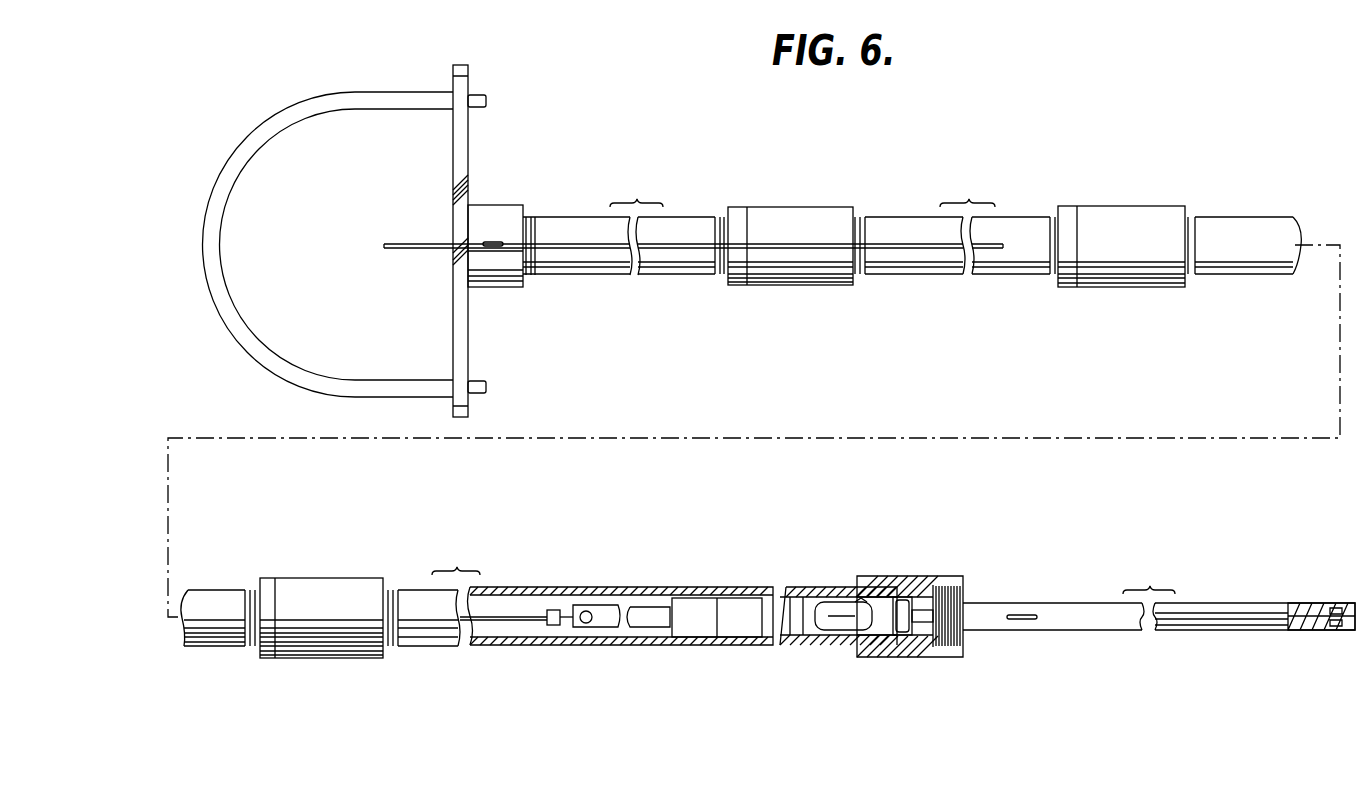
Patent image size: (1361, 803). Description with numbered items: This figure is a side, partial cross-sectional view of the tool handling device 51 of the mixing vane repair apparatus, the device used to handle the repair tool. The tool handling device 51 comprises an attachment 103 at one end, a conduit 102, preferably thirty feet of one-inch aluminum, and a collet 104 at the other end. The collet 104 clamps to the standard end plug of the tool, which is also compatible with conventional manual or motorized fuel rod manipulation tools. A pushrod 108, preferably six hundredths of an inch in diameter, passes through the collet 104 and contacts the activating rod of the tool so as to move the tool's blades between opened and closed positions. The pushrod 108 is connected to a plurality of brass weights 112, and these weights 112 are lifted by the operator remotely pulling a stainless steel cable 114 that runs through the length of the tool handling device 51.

The tool handling device 51 is at (741, 394).
The conduit 102 is at (788, 178).
The attachment 103 is at (325, 136).
The collet 104 is at (1063, 584).
The pushrod 108 is at (1192, 619).
The brass weights 112 is at (765, 600).
The stainless steel cable 114 is at (393, 272).